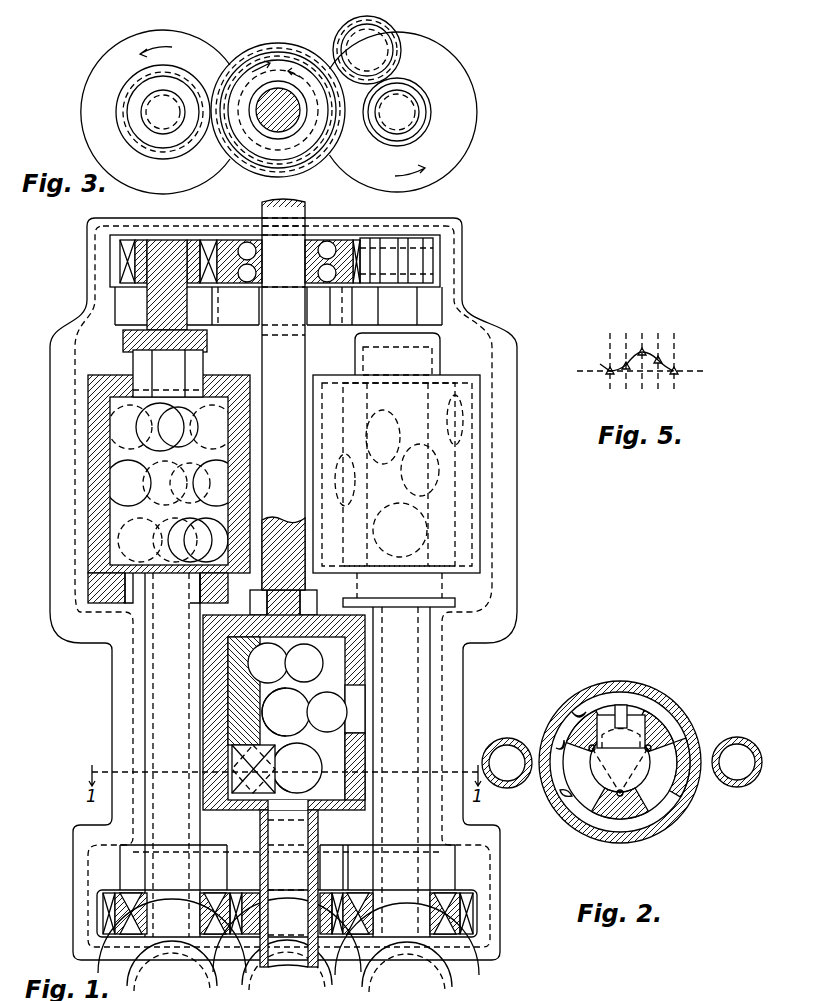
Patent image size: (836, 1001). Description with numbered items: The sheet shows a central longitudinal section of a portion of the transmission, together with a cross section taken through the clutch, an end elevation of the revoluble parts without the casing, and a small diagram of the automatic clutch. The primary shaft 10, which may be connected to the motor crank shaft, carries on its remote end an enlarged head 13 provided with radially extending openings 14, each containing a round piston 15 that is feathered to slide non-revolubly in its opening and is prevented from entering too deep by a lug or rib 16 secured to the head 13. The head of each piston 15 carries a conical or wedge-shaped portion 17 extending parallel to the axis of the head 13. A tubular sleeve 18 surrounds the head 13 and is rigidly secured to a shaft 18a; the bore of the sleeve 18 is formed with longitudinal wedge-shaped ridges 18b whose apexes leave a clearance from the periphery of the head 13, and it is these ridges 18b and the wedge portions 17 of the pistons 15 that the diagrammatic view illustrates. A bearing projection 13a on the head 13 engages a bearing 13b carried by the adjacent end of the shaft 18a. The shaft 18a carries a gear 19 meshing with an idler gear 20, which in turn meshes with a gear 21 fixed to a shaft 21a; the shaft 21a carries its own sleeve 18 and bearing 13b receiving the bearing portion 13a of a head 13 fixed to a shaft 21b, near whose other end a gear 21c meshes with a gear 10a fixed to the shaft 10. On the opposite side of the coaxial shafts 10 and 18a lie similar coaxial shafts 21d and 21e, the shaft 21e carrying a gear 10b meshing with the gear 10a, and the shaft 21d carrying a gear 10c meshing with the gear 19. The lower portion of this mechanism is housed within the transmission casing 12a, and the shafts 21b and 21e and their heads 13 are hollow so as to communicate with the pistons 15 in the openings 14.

In FIG. 1, the primary shaft 10 is at (262, 965).
In FIG. 1, the gear 10a is at (255, 905).
In FIG. 1, the gear 10b is at (130, 912).
In FIG. 1, the gear 10c is at (132, 258).
In FIG. 1, the transmission casing 12a is at (70, 645).
In FIG. 1, the enlarged head 13 is at (343, 745).
In FIG. 2, the enlarged head 13 is at (665, 728).
In FIG. 1, the bearing projection 13a is at (178, 367).
In FIG. 1, the bearing 13b is at (143, 362).
In FIG. 1, the radially extending opening 14 is at (332, 712).
In FIG. 2, the radially extending opening 14 is at (633, 712).
In FIG. 1, the piston 15 is at (286, 712).
In FIG. 2, the piston 15 is at (637, 735).
In FIG. 2, the lug or rib 16 is at (620, 762).
In FIG. 1, the conical ridge or wedge-shaped portion 17 is at (235, 775).
In FIG. 5, the conical ridge or wedge-shaped portion 17 is at (676, 373).
In FIG. 2, the conical ridge or wedge-shaped portion 17 is at (620, 712).
In FIG. 1, the tubular sleeve 18 is at (250, 415).
In FIG. 2, the tubular sleeve 18 is at (645, 840).
In FIG. 3, the shaft 18a is at (279, 128).
In FIG. 1, the shaft 18a is at (292, 365).
In FIG. 1, the conical or wedge-shaped ridges 18b is at (110, 546).
In FIG. 5, the conical or wedge-shaped ridges 18b is at (676, 368).
In FIG. 2, the conical or wedge-shaped ridges 18b is at (690, 790).
In FIG. 1, the gear 19 is at (250, 248).
In FIG. 3, the idler gear 20 is at (373, 58).
In FIG. 3, the gear 21 is at (425, 100).
In FIG. 1, the gear 21 is at (422, 255).
In FIG. 3, the shaft 21a is at (392, 126).
In FIG. 1, the shaft 21b is at (403, 686).
In FIG. 2, the shaft 21b is at (737, 762).
In FIG. 1, the gear 21c is at (427, 952).
In FIG. 3, the shaft 21d is at (152, 115).
In FIG. 1, the shaft 21d is at (152, 300).
In FIG. 1, the shaft 21e is at (160, 722).
In FIG. 2, the shaft 21e is at (507, 763).